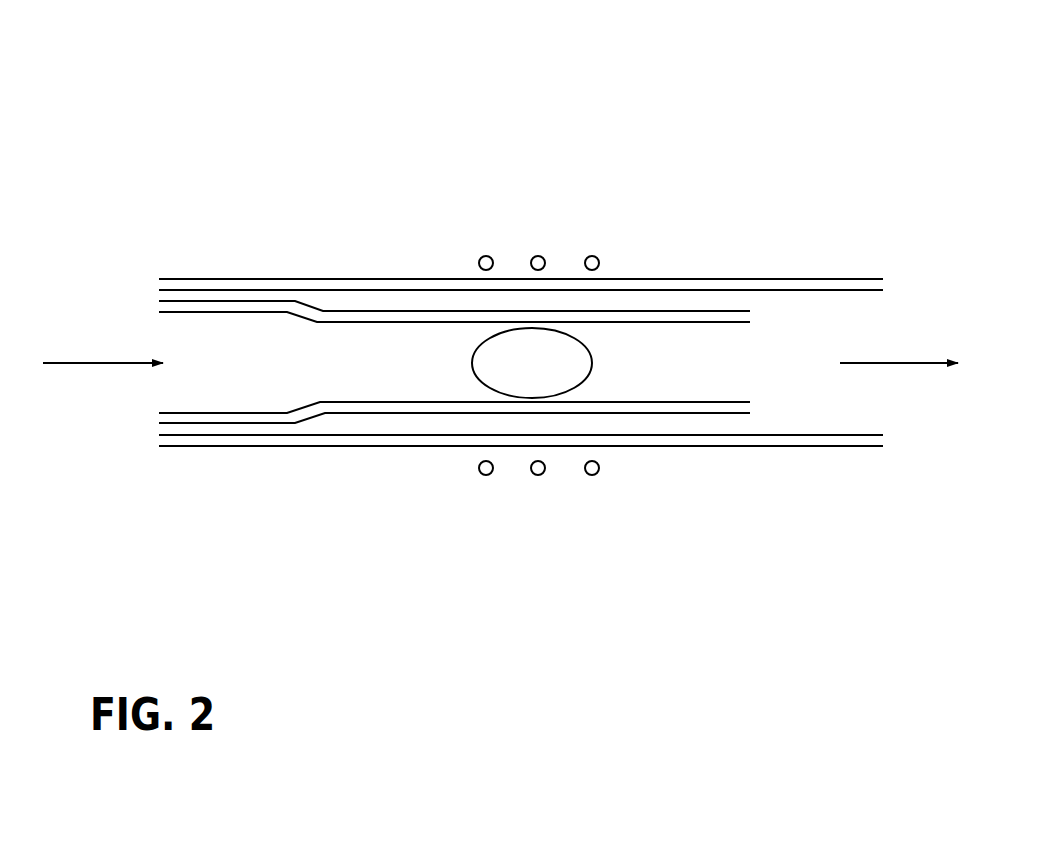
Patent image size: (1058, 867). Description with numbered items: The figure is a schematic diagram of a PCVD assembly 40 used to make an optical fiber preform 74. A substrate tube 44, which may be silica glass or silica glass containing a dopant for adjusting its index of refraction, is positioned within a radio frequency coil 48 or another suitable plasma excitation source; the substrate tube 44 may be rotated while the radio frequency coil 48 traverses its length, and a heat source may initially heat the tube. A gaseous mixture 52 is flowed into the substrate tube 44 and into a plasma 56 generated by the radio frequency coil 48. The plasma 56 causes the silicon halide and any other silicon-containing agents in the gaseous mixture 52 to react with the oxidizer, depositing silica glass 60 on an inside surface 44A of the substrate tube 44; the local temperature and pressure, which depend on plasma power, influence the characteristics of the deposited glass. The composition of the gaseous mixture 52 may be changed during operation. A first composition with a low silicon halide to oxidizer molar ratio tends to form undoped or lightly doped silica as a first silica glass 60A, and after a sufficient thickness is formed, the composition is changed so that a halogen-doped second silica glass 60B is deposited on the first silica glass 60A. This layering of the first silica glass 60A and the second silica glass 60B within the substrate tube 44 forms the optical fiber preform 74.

The PCVD assembly 40 is at (345, 107).
The substrate tube 44 is at (350, 289).
The inside surface 44A is at (732, 290).
The radio frequency coil 48 is at (528, 258).
The gaseous mixture 52 is at (87, 362).
The plasma 56 is at (541, 369).
The silica glass 60 is at (313, 417).
The first silica glass 60A is at (423, 427).
The second silica glass 60B is at (383, 407).
The optical fiber preform 74 is at (755, 413).